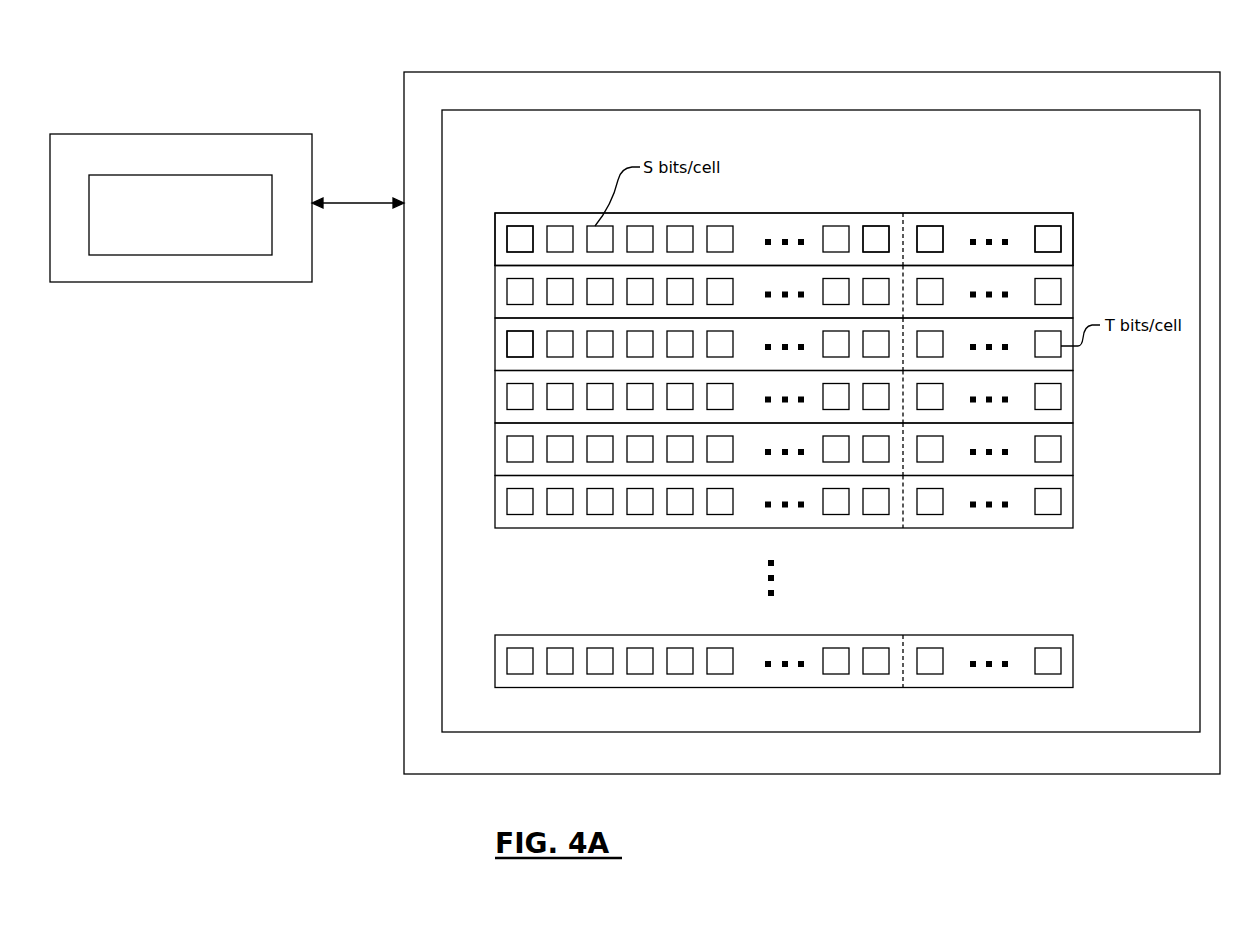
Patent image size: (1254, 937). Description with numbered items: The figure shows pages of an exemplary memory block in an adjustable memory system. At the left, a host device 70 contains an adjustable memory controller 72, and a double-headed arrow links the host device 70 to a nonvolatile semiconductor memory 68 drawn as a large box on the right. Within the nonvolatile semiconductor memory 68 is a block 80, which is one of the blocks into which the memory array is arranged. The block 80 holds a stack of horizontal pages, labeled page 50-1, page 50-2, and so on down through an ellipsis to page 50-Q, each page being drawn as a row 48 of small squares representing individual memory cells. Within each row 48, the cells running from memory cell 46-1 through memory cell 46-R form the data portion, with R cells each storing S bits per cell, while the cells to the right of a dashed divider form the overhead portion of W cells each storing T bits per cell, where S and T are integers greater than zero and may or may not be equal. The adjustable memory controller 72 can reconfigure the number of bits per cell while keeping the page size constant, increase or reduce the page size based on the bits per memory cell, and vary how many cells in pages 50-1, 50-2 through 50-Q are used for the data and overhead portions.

The host device 70 is at (248, 134).
The adjustable memory controller 72 is at (169, 255).
The nonvolatile semiconductor memory 68 is at (683, 72).
The memory block 80 is at (1075, 110).
The memory cell 46-1 is at (521, 226).
The page row of memory cells 48 is at (788, 213).
The memory cell 46-R is at (867, 226).
The page 50-1 is at (1073, 243).
The page 50-2 is at (1073, 295).
The page 50-Q is at (1073, 660).